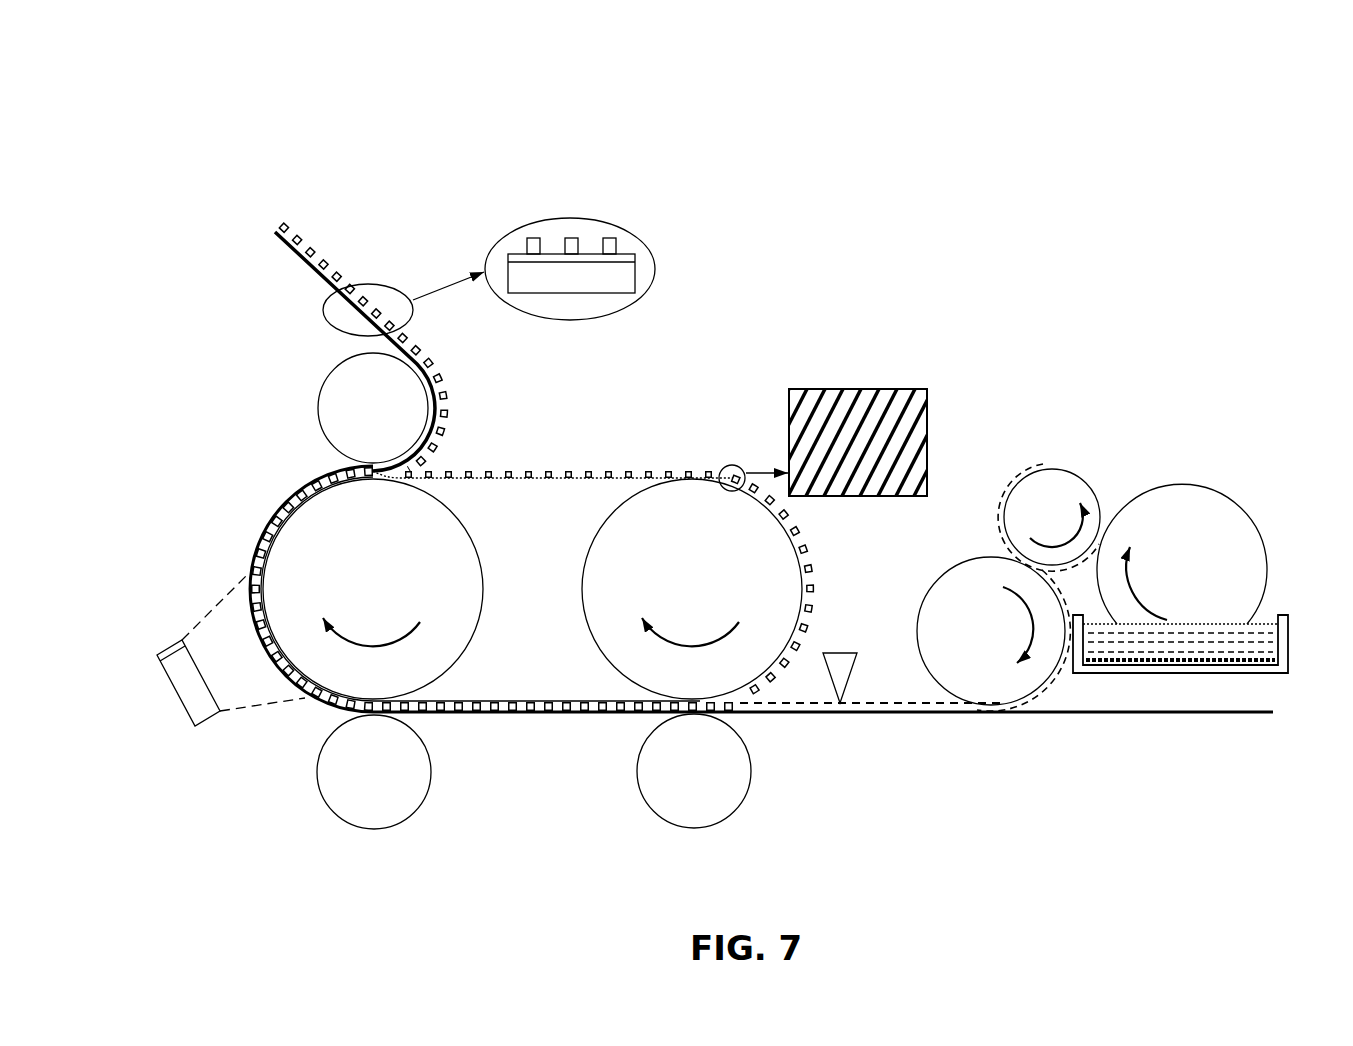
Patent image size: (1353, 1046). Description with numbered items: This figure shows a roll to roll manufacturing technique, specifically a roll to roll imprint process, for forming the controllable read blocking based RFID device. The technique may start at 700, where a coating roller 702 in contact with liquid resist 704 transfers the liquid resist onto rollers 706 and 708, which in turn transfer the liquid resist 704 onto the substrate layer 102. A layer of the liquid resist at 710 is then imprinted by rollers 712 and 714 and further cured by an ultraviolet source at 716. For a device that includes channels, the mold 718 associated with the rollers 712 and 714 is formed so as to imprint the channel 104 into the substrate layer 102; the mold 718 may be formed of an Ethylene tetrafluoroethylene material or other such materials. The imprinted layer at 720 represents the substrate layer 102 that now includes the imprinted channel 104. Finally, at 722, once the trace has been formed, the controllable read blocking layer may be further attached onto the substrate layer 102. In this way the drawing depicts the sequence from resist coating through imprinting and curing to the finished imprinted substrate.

The substrate layer 102 is at (552, 293).
The channel 104 is at (553, 243).
The start of the roll to roll manufacturing technique 700 is at (1223, 340).
The coating roller 702 is at (1208, 481).
The liquid resist 704 is at (1262, 624).
The roller 706 is at (1054, 465).
The roller 708 is at (937, 573).
The layer of the liquid resist 710 is at (787, 705).
The roller 712 is at (603, 523).
The roller 714 is at (465, 698).
The ultraviolet (UV) source 716 is at (167, 648).
The mold 718 is at (902, 372).
The imprinted layer 720 is at (635, 231).
The attachment stage 722 is at (614, 178).